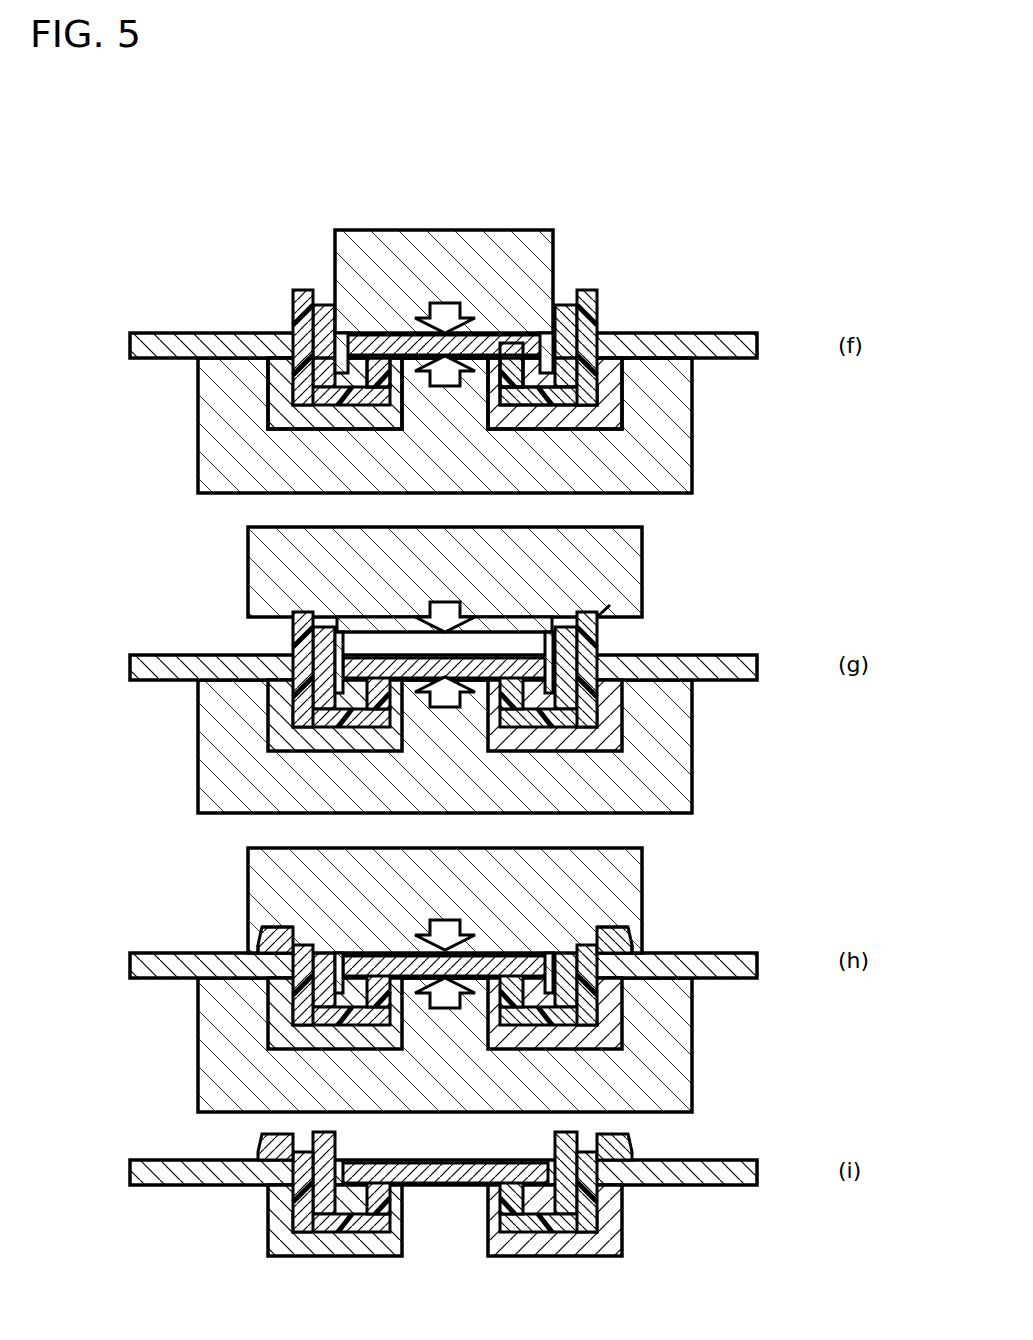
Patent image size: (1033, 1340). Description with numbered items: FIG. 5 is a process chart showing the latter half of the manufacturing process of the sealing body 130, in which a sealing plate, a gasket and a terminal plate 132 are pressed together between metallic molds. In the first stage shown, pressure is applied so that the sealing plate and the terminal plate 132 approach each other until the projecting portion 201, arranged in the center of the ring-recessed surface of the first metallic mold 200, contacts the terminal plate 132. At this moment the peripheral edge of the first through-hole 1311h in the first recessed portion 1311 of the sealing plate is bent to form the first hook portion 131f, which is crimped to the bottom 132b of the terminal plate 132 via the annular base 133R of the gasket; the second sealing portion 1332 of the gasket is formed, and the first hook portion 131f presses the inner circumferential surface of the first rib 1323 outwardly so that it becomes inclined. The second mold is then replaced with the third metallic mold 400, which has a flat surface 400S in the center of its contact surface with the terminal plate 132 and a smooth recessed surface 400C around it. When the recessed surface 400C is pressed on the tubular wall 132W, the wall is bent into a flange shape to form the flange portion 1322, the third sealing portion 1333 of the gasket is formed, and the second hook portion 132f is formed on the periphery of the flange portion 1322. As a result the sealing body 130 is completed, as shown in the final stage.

The first hook portion 131f is at (385, 370).
The annular base 133R is at (505, 350).
The bottom 132b is at (515, 345).
The first rib 1323 is at (345, 395).
The first recessed portion 1311 is at (317, 425).
The first through-hole 1311h is at (434, 424).
The second sealing portion 1332 is at (563, 418).
The first metallic mold 200 is at (668, 441).
The projecting portion 201 is at (443, 412).
The flat surface 400S is at (410, 638).
The tubular wall 132W is at (327, 647).
The third metallic mold 400 is at (627, 572).
The recessed surface 400C is at (612, 607).
The terminal plate 132 is at (562, 655).
The flange portion 1322 is at (268, 937).
The second hook portion 132f is at (263, 942).
The third sealing portion 1333 is at (255, 946).
The sealing body 130 is at (458, 1148).